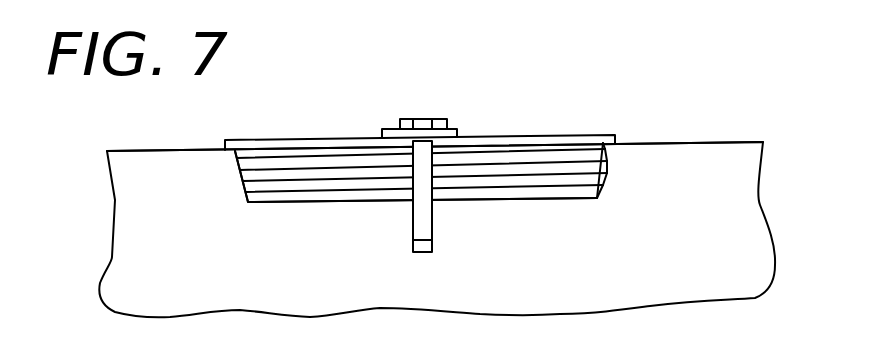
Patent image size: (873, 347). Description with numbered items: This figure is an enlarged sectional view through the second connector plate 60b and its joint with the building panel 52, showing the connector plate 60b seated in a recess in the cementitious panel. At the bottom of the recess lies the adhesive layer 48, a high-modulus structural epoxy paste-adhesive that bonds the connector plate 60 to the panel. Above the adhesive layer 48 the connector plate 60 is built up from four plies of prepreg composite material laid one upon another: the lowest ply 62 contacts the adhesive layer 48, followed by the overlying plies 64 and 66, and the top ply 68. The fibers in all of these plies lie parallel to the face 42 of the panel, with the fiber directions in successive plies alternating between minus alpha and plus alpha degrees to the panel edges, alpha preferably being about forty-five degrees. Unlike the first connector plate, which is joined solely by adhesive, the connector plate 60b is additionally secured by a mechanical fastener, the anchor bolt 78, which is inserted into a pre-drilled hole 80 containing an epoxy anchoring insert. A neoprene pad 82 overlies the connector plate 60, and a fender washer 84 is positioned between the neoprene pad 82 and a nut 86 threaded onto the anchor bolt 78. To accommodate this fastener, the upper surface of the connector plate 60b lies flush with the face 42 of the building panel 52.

The face 42 is at (200, 150).
The adhesive layer 48 is at (600, 187).
The building panel 52 is at (151, 170).
The connector plate 60 is at (517, 199).
The connector plate 60b is at (290, 198).
The lowest ply 62 is at (600, 181).
The ply 64 is at (603, 170).
The ply 66 is at (605, 157).
The top ply 68 is at (605, 149).
The anchor bolt 78 is at (433, 218).
The pre-drilled hole 80 is at (421, 253).
The neoprene pad 82 is at (275, 140).
The fender washer 84 is at (382, 132).
The nut 86 is at (438, 119).